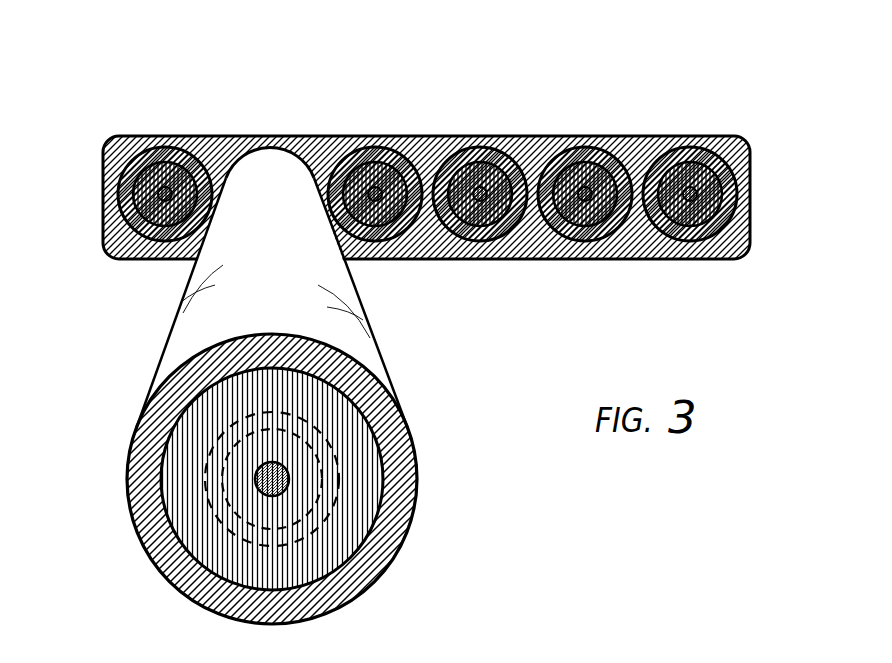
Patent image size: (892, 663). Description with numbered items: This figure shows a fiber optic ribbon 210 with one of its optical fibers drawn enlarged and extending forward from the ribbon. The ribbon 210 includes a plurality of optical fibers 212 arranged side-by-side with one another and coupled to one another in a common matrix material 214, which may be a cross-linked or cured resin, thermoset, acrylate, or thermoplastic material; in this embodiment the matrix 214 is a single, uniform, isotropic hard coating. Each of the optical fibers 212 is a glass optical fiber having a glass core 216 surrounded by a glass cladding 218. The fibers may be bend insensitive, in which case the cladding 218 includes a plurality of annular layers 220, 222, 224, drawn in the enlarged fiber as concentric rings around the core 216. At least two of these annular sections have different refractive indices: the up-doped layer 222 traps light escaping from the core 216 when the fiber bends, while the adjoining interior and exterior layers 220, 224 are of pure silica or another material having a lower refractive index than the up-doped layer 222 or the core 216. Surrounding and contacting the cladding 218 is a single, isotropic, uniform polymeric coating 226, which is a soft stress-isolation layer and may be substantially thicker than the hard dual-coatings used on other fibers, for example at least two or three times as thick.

The fiber optic ribbon 210 is at (426, 191).
The optical fibers 212 is at (245, 281).
The matrix material 214 is at (428, 150).
The glass core 216 is at (480, 202).
The glass cladding 218 is at (495, 182).
The annular layer 220 is at (312, 470).
The up-doped layer 222 is at (308, 428).
The annular layer 224 is at (290, 395).
The polymeric coating 226 is at (168, 572).